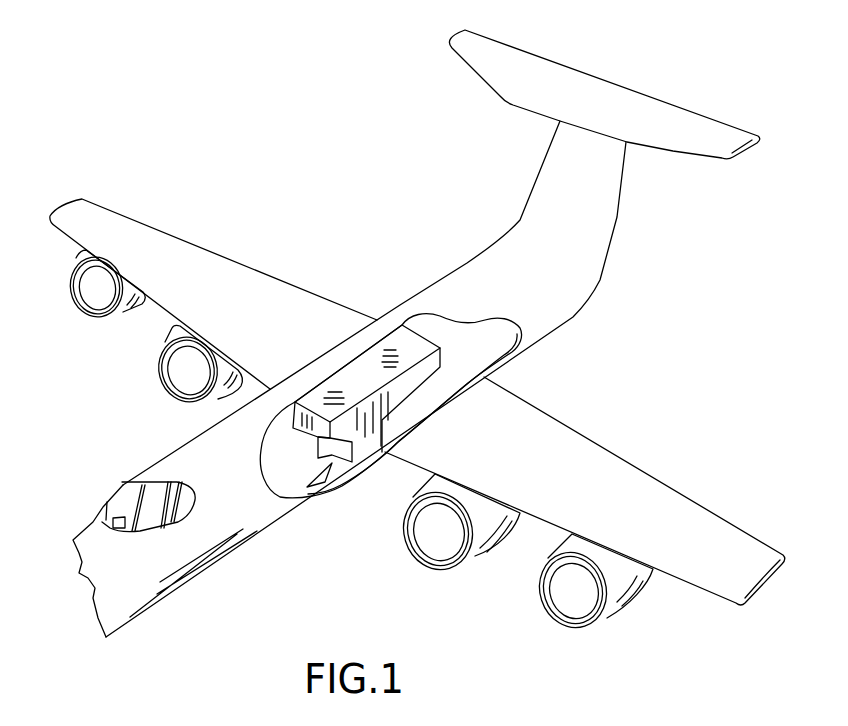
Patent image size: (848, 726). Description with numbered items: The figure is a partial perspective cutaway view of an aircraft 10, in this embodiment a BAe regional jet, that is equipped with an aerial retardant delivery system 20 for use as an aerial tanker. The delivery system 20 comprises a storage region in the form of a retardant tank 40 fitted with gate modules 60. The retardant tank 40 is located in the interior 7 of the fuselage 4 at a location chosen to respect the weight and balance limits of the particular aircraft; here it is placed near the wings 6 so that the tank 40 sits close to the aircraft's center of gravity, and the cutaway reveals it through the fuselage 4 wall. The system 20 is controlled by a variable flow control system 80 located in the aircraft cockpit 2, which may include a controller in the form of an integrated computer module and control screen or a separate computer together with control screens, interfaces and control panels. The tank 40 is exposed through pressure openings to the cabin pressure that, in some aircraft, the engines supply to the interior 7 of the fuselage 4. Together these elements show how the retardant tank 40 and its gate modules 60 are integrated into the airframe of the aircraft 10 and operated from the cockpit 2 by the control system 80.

The aircraft 10 is at (417, 333).
The fuselage 4 is at (530, 347).
The wings 6 is at (255, 277).
The aircraft cockpit 2 is at (148, 518).
The variable flow control system 80 is at (118, 529).
The aerial retardant delivery system 20 is at (132, 406).
The interior 7 is at (486, 322).
The retardant tank 40 is at (420, 392).
The gate modules 60 is at (331, 510).